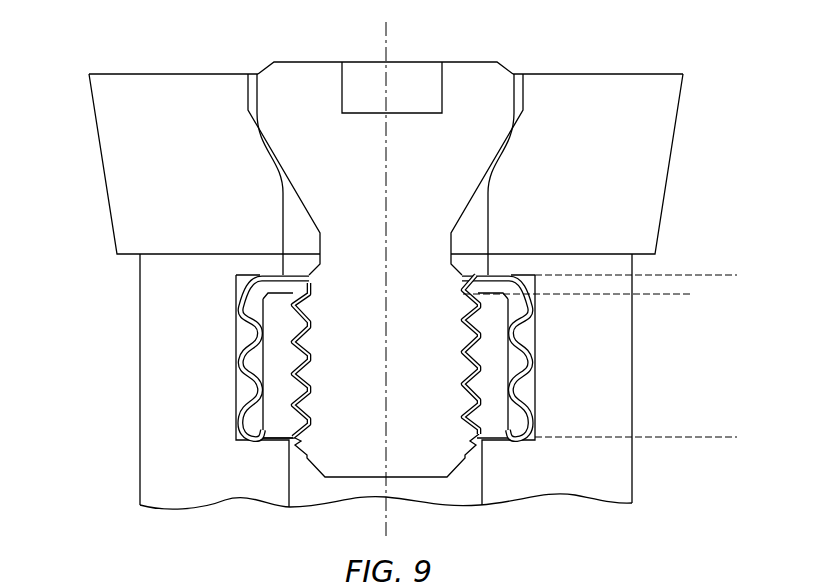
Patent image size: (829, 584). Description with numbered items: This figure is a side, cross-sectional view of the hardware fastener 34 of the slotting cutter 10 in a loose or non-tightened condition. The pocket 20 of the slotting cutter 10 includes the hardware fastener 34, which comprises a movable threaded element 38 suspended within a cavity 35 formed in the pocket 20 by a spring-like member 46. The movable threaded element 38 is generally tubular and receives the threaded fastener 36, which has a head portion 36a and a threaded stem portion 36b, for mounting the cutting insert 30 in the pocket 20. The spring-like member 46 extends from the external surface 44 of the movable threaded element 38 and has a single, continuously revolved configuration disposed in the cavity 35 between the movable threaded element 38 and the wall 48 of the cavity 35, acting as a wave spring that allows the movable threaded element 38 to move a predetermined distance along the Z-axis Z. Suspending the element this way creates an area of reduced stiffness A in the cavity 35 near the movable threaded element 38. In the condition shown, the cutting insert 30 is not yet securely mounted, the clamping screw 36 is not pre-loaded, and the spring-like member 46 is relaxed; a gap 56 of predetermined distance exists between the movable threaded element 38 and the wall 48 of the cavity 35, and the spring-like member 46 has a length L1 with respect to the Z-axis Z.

The slotting cutter 10 is at (46, 61).
The pocket 20 is at (683, 165).
The cutting insert 30 is at (659, 70).
The threaded fastener 36 is at (412, 279).
The head portion 36a is at (494, 83).
The threaded stem portion 36b is at (429, 447).
The hardware fastener 34 is at (381, 412).
The cavity 35 is at (381, 362).
The movable threaded element 38 is at (257, 320).
The external surface 44 is at (245, 385).
The spring-like member 46 is at (273, 365).
The wall 48 is at (268, 440).
The gap 56 is at (680, 297).
The length L1 is at (719, 278).
The Z-axis Z is at (387, 40).
The area of reduced stiffness A is at (243, 278).